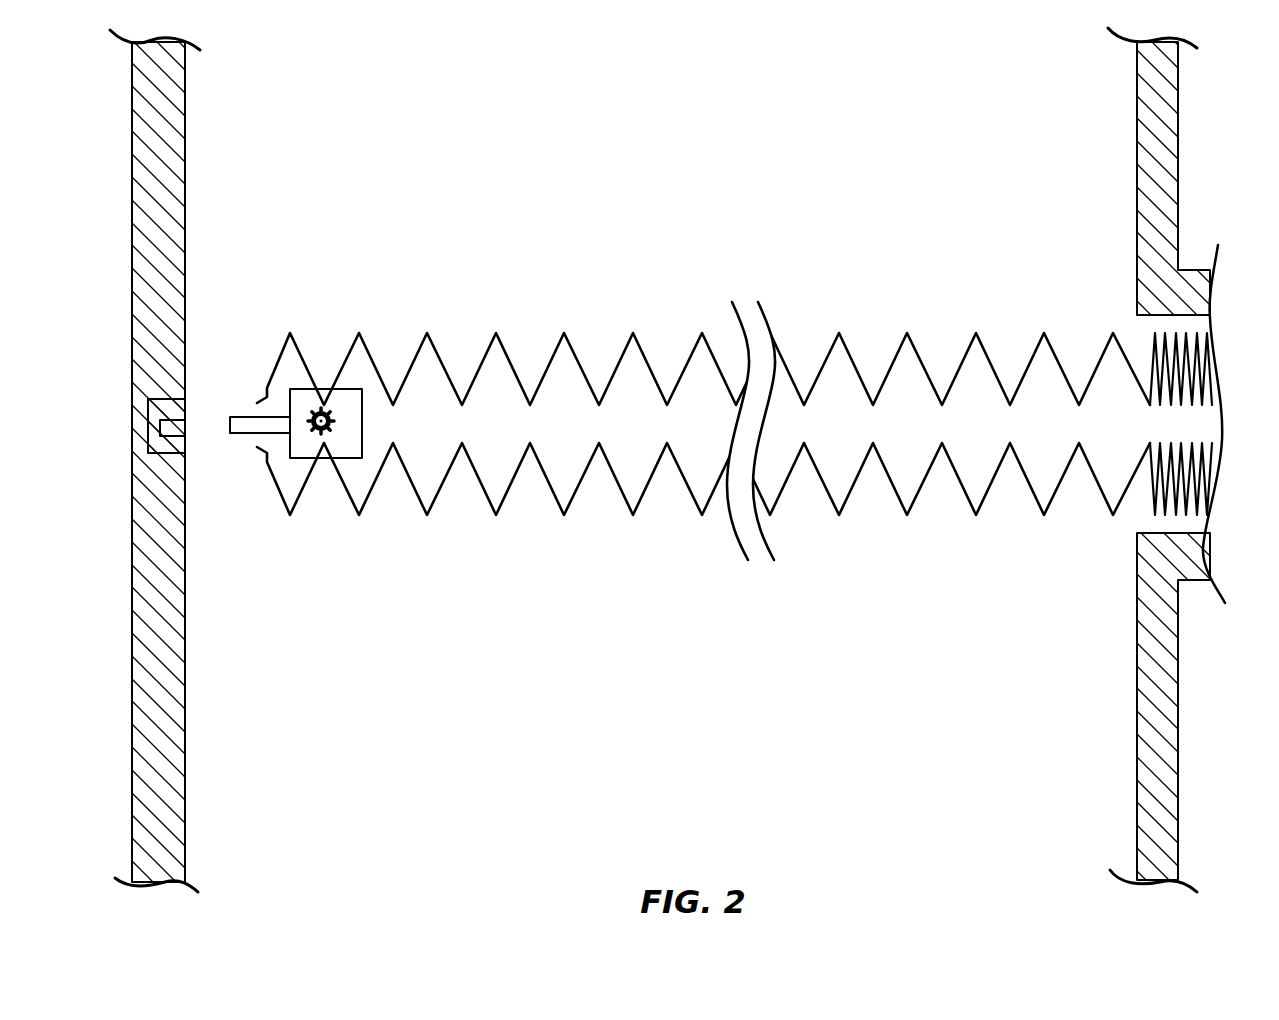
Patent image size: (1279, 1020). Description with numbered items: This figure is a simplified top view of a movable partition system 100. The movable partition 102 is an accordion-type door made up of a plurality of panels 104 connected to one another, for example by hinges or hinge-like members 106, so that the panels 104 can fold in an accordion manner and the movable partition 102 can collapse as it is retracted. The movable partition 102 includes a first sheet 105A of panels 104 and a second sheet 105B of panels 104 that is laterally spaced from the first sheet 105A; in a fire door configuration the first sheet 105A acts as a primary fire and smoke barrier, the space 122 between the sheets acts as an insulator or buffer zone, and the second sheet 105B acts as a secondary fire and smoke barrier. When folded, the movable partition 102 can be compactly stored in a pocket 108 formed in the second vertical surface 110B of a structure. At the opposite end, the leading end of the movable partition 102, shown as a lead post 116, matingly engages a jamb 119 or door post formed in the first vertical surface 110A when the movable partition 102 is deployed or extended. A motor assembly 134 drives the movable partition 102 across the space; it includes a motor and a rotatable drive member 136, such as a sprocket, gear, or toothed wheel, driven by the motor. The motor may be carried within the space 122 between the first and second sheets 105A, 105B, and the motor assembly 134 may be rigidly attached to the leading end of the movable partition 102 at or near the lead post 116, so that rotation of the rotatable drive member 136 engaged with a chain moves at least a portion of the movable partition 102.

The movable partition system 100 is at (650, 120).
The movable partition 102 is at (553, 278).
The panels 104 is at (517, 477).
The first sheet 105A is at (950, 362).
The second sheet 105B is at (860, 506).
The hinge-like members 106 is at (632, 513).
The pocket 108 is at (1150, 523).
The first vertical surface 110A is at (186, 740).
The second vertical surface 110B is at (1137, 765).
The lead post 116 is at (250, 416).
The jamb 119 is at (175, 435).
The space 122 is at (960, 433).
The motor assembly 134 is at (303, 458).
The rotatable drive member 136 is at (323, 410).